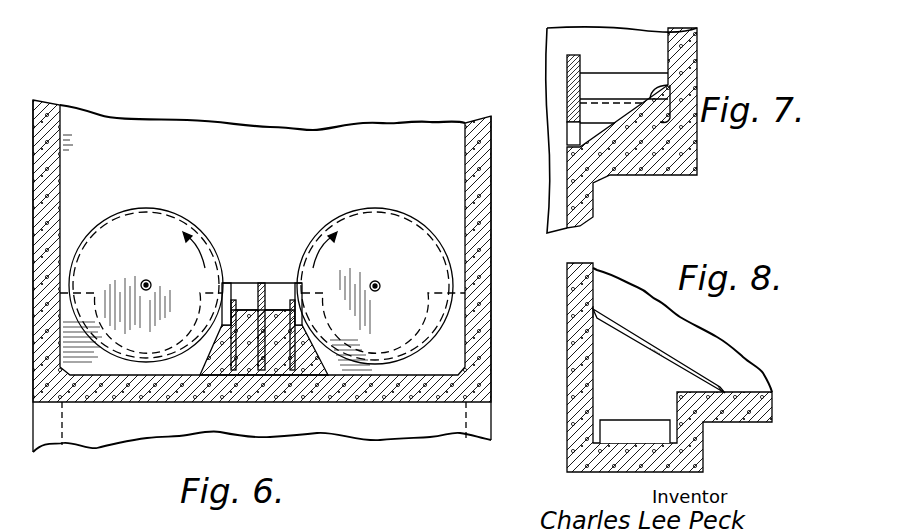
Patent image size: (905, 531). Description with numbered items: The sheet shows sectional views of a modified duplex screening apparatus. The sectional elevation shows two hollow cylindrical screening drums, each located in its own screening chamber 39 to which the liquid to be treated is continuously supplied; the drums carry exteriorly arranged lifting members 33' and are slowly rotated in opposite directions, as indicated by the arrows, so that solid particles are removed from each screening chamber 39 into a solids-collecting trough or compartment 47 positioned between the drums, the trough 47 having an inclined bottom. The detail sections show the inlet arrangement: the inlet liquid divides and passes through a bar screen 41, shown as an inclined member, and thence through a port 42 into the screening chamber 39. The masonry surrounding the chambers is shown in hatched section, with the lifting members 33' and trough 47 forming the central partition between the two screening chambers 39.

In FIG. 6, the lifting member 33' is at (277, 279).
In FIG. 6, the solids-collecting trough 47 is at (251, 281).
In FIG. 7, the solids-collecting trough 47 is at (669, 83).
In FIG. 6, the screening chamber 39 is at (135, 367).
In FIG. 8, the bar screen 41 is at (613, 318).
In FIG. 8, the port 42 is at (607, 432).